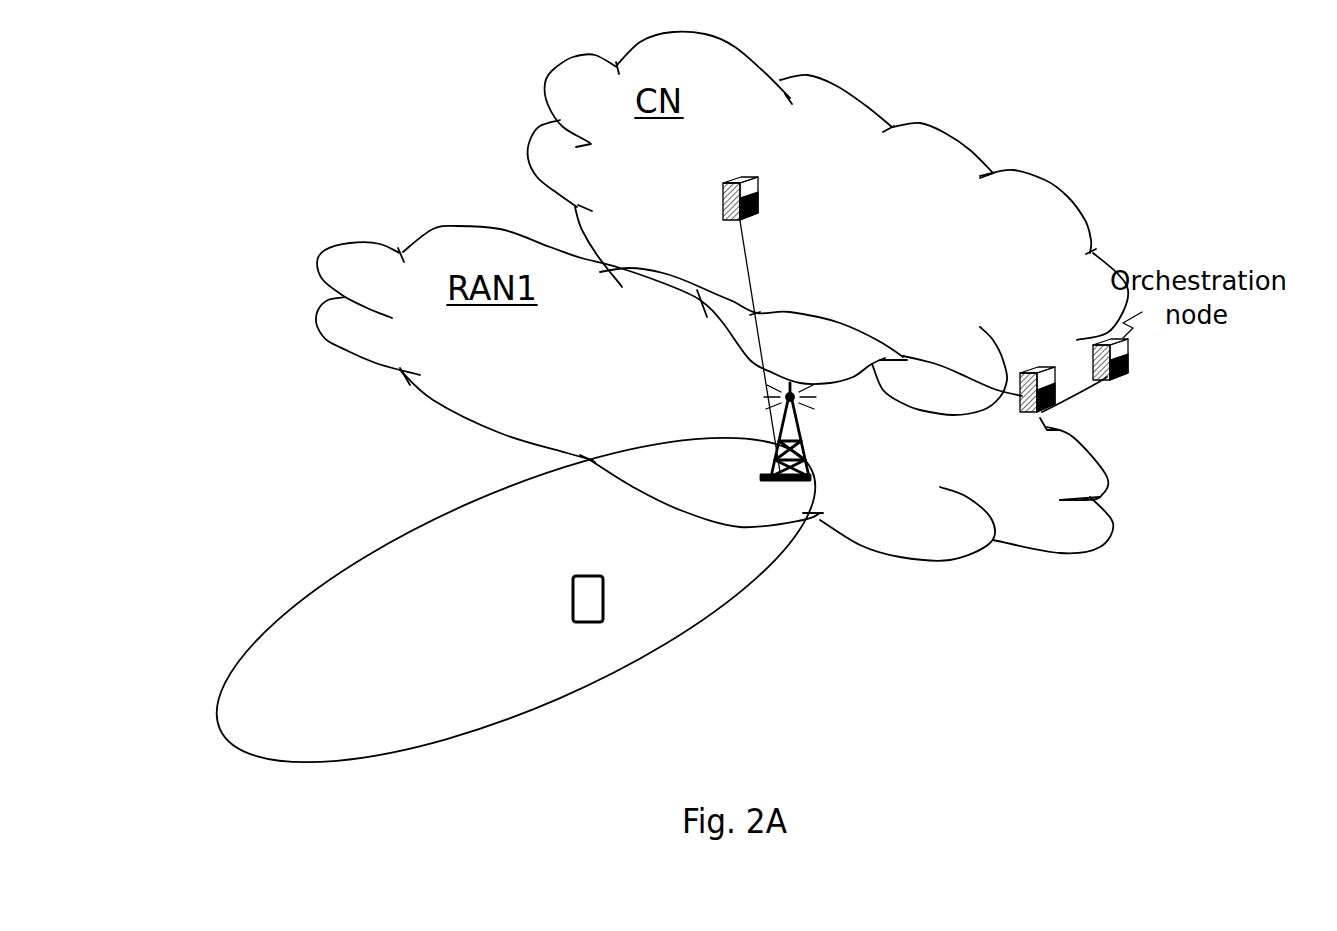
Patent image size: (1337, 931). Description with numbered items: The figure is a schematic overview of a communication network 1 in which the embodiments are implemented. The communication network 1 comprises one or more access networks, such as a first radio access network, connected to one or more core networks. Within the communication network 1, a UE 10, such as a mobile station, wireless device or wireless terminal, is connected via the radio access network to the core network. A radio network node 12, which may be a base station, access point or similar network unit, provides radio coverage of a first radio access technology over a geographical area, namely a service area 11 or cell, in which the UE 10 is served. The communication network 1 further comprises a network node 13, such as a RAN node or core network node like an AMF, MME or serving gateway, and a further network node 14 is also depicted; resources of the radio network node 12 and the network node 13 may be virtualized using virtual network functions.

The communication network 1 is at (424, 111).
The UE 10 is at (596, 587).
The service area 11 is at (388, 676).
The radio network node 12 is at (798, 433).
The network node 13 is at (743, 182).
The network node 14 is at (1037, 368).